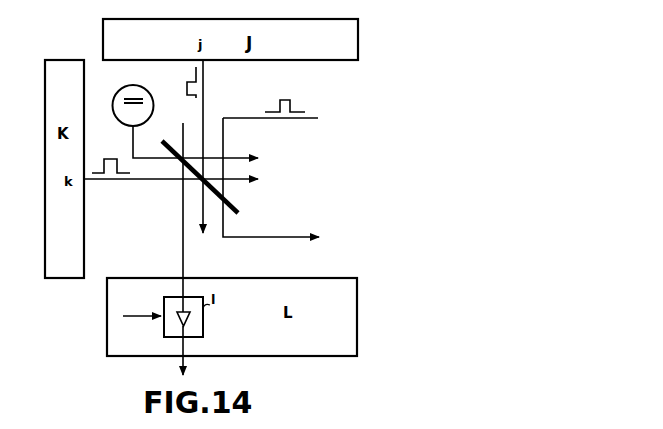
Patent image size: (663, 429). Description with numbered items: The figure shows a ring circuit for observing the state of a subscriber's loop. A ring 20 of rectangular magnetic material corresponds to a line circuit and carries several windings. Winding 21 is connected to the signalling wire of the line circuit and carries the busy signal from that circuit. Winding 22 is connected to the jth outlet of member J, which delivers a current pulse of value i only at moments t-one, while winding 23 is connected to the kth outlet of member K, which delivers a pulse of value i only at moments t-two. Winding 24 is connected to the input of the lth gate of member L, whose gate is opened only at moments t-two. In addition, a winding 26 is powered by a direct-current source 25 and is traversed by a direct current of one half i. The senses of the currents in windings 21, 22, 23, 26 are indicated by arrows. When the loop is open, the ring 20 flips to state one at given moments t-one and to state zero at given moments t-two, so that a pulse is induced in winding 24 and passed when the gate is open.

The ring 20 is at (240, 212).
The winding 21 is at (278, 121).
The winding 22 is at (205, 102).
The winding 23 is at (122, 186).
The winding 24 is at (182, 242).
The direct-current source 25 is at (140, 85).
The winding 26 is at (147, 157).